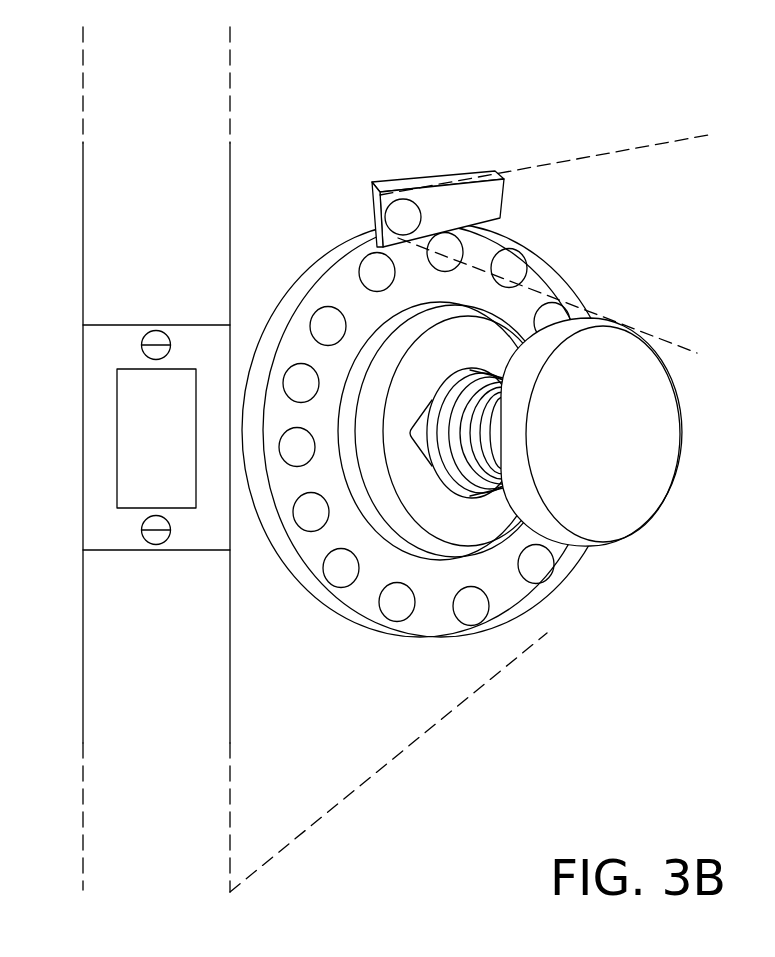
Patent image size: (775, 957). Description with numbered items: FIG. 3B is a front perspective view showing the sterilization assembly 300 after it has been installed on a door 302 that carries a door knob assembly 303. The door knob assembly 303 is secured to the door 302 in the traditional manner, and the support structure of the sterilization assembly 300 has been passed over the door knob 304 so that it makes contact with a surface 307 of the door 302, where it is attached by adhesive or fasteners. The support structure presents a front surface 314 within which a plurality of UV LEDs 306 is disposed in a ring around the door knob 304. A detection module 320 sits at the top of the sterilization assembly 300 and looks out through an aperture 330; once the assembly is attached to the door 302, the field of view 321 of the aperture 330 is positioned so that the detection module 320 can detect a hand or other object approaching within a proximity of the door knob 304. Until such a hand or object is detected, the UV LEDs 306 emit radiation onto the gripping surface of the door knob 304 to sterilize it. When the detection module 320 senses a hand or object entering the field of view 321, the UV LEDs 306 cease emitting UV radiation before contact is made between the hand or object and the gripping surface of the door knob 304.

The sterilization assembly 300 is at (489, 360).
The door 302 is at (143, 210).
The door knob assembly 303 is at (683, 443).
The door knob 304 is at (600, 482).
The UV LEDs 306 is at (379, 602).
The surface 307 is at (302, 790).
The front surface 314 is at (552, 272).
The detection module 320 is at (388, 183).
The field of view 321 is at (653, 334).
The aperture 330 is at (385, 218).